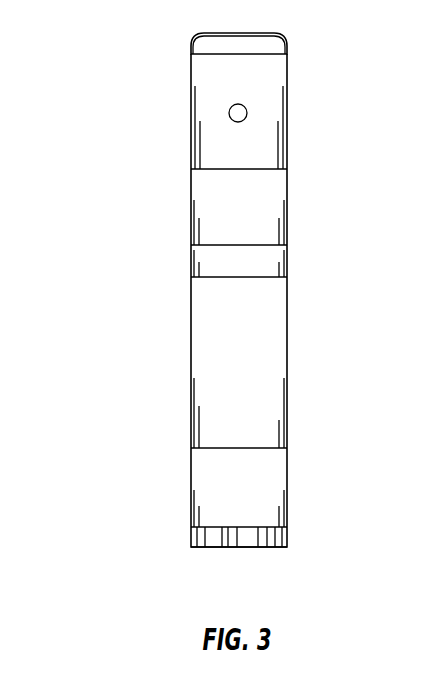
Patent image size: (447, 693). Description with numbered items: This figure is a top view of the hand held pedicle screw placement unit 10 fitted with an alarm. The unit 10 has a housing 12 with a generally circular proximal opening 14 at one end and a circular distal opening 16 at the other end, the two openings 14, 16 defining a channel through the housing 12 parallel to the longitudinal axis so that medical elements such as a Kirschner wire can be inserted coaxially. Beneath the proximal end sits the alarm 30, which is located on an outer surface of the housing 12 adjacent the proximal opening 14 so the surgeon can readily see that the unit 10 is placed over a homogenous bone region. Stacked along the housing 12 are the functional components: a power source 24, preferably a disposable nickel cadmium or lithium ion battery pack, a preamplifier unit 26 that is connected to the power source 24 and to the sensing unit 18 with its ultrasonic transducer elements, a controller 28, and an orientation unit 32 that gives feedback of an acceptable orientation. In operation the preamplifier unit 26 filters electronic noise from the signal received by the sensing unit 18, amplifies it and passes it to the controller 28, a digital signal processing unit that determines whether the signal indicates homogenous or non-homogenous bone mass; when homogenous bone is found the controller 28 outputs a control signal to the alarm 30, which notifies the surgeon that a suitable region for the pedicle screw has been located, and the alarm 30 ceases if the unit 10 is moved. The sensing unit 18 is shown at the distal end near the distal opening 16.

The hand held pedicle screw placement unit 10 is at (127, 70).
The housing 12 is at (198, 346).
The proximal opening 14 is at (238, 33).
The distal opening 16 is at (235, 547).
The sensing unit 18 is at (287, 537).
The power source 24 is at (287, 340).
The preamplifier unit 26 is at (287, 482).
The controller 28 is at (287, 196).
The alarm 30 is at (247, 113).
The orientation unit 32 is at (287, 262).